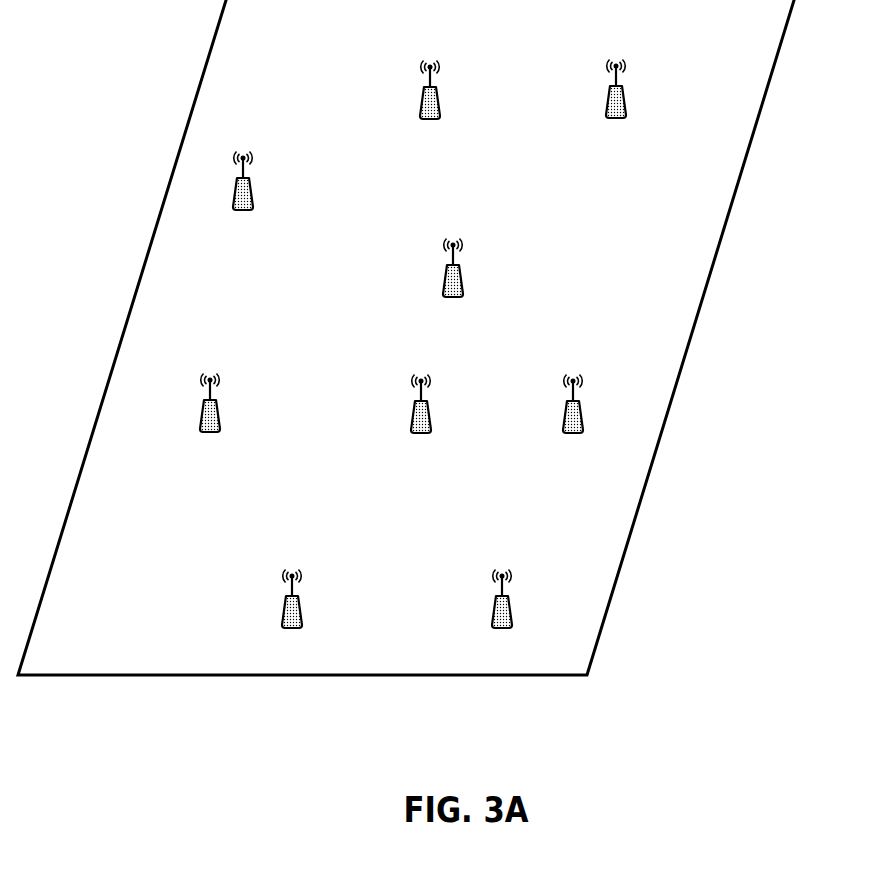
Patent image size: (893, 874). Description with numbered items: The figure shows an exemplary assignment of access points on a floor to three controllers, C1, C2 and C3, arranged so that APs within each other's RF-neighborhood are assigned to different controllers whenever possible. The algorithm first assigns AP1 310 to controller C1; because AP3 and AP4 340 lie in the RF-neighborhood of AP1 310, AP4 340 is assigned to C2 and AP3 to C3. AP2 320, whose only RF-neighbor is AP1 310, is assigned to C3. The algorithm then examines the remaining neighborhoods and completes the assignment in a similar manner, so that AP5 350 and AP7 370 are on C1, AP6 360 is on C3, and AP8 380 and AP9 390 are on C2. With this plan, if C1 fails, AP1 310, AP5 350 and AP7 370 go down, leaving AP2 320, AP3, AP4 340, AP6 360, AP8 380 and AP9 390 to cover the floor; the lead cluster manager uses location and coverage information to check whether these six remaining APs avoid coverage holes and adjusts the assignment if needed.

The AP1 310 is at (419, 180).
The AP2 320 is at (601, 180).
The AP4 340 is at (464, 354).
The AP5 350 is at (184, 504).
The AP6 360 is at (394, 504).
The AP7 370 is at (562, 496).
The AP8 380 is at (217, 640).
The AP9 390 is at (427, 640).